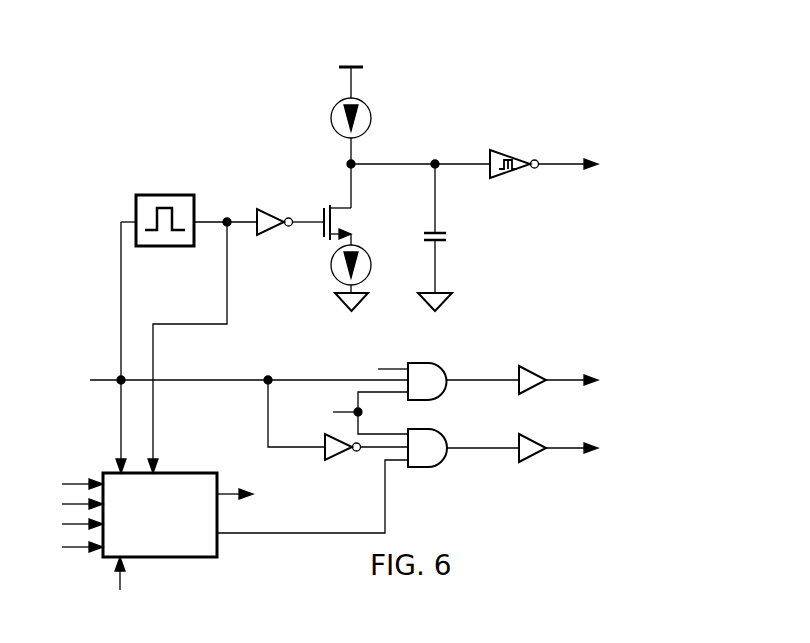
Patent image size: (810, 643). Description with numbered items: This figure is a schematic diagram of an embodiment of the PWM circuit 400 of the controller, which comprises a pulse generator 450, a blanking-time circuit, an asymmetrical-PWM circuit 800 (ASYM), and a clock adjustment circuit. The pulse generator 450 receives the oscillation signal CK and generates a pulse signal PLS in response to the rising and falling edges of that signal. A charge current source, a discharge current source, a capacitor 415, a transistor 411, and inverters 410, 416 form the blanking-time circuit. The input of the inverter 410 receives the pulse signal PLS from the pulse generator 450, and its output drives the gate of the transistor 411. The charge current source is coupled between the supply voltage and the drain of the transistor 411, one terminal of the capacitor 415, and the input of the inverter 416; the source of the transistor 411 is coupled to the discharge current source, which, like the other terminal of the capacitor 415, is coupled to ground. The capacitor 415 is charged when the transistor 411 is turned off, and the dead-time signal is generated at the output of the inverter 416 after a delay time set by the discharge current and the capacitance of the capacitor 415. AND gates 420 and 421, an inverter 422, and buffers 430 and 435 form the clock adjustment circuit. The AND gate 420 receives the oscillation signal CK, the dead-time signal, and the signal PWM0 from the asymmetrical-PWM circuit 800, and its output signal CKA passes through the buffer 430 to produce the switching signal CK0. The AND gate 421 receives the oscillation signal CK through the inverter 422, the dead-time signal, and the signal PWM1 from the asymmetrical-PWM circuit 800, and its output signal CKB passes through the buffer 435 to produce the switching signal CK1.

The PWM circuit 400 is at (722, 70).
The inverter 410 is at (290, 212).
The transistor 411 is at (332, 217).
The capacitor 415 is at (455, 228).
The inverter 416 is at (544, 152).
The AND gate 420 is at (461, 370).
The AND gate 421 is at (462, 437).
The inverter 422 is at (366, 459).
The buffer 430 is at (558, 367).
The buffer 435 is at (558, 435).
The pulse generator 450 is at (165, 209).
The asymmetrical-PWM circuit 800 is at (160, 504).